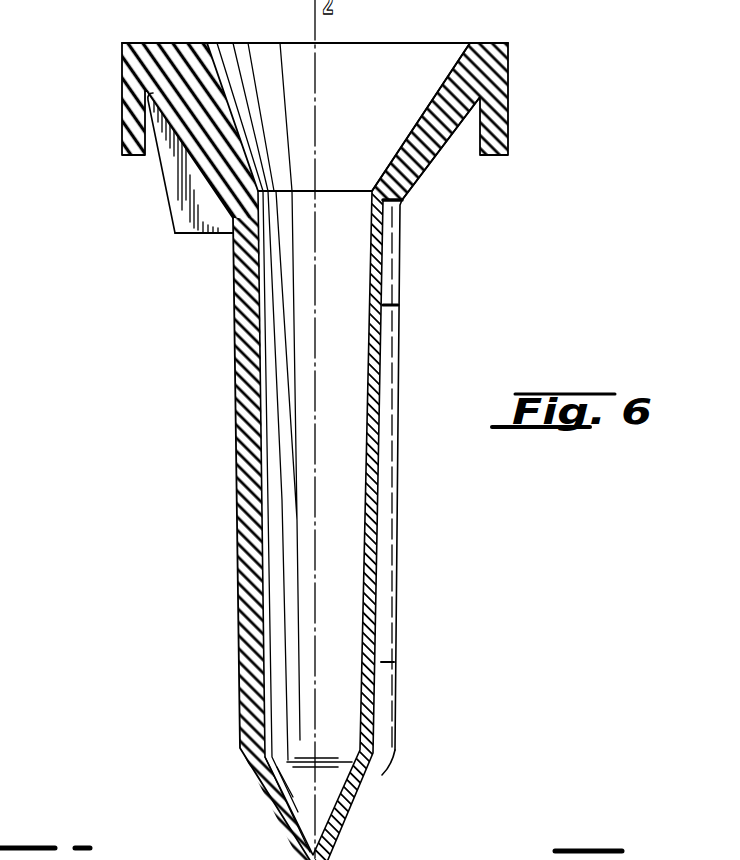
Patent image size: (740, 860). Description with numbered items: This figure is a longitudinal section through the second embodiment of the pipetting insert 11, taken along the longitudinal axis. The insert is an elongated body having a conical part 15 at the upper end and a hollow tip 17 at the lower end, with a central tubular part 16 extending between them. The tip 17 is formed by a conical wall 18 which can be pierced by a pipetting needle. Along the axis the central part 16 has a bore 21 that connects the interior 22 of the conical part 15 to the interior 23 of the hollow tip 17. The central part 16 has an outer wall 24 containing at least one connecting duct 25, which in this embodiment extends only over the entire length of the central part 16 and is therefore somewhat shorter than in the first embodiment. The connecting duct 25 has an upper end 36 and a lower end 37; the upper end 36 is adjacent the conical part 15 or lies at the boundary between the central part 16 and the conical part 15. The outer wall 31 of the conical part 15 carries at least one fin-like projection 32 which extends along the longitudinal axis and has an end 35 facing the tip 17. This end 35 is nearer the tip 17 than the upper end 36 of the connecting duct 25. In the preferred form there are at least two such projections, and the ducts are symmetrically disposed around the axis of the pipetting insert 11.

The pipetting insert 11 is at (478, 308).
The conical part 15 is at (140, 190).
The central tubular part 16 is at (223, 756).
The hollow tip 17 is at (150, 757).
The conical wall 18 is at (275, 805).
The bore 21 is at (348, 542).
The interior of the conical part 22 is at (385, 67).
The interior of the hollow tip 23 is at (328, 802).
The outer wall 24 is at (237, 512).
The connecting duct 25 is at (383, 583).
The outer wall of the conical part 31 is at (417, 163).
The fin-like projection 32 is at (178, 210).
The end of the fin-like projection 35 is at (183, 237).
The upper end of the connecting duct 36 is at (398, 203).
The lower end of the connecting duct 37 is at (380, 783).